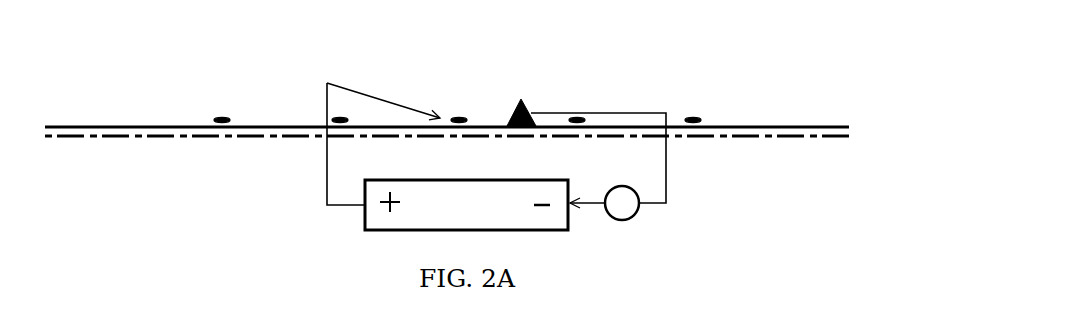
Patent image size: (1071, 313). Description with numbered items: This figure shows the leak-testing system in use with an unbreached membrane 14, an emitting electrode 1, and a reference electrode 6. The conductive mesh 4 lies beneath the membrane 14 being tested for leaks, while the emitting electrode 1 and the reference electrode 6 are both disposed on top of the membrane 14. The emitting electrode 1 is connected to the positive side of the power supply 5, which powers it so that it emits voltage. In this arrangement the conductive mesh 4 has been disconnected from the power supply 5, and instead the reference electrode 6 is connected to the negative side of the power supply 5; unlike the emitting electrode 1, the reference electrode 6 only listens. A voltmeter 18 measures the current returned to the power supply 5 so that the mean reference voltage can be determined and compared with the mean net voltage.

The emitting electrode 1 is at (459, 115).
The conductive mesh 4 is at (709, 138).
The power supply 5 is at (443, 174).
The reference electrode 6 is at (533, 100).
The membrane 14 is at (723, 122).
The voltmeter 18 is at (643, 212).